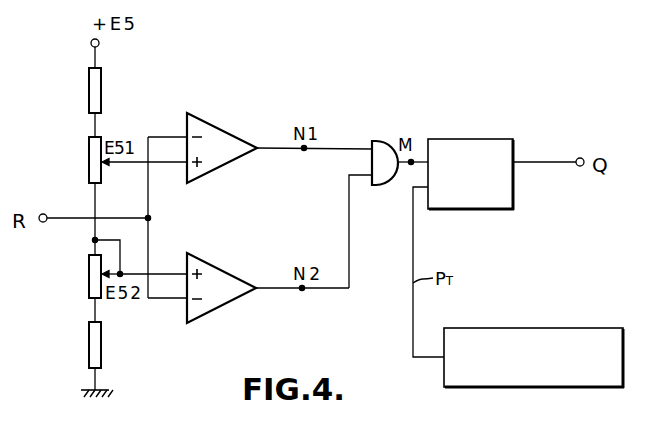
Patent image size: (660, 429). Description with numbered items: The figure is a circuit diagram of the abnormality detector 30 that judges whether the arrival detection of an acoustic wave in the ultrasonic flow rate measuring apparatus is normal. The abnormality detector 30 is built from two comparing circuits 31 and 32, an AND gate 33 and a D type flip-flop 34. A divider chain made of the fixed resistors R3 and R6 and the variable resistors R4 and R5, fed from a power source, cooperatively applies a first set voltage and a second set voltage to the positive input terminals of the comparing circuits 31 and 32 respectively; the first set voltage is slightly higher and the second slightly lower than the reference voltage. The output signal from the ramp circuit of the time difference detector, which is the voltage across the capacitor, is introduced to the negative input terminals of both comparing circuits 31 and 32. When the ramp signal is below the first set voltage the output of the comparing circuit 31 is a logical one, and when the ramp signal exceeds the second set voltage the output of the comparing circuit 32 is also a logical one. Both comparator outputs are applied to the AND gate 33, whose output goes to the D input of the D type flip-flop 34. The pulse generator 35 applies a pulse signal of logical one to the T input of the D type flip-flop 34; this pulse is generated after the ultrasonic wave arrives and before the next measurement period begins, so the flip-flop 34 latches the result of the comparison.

The abnormality detector 30 is at (301, 216).
The comparing circuit 31 is at (225, 167).
The comparing circuit 32 is at (219, 310).
The AND gate 33 is at (383, 186).
The D type flip-flop 34 is at (492, 211).
The pulse generator 35 is at (503, 328).
The fixed resistor R3 is at (89, 85).
The variable resistor R4 is at (89, 165).
The variable resistor R5 is at (89, 284).
The fixed resistor R6 is at (89, 364).